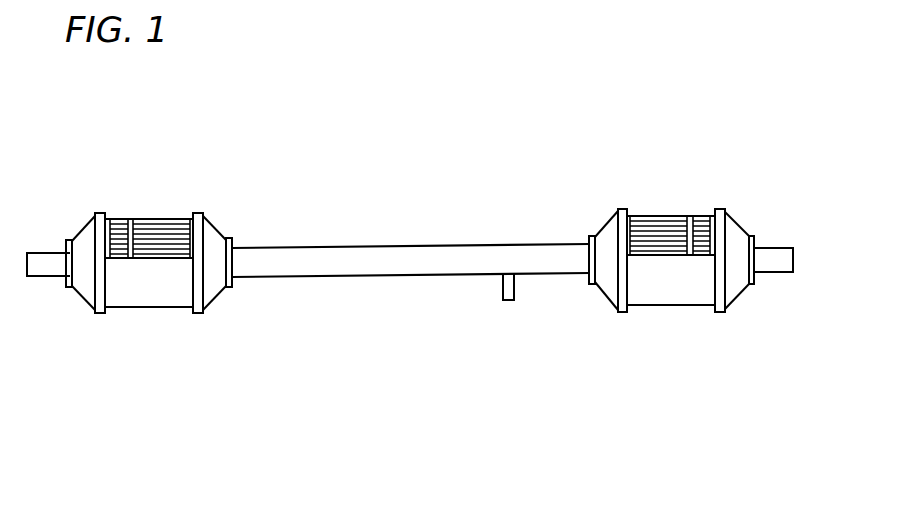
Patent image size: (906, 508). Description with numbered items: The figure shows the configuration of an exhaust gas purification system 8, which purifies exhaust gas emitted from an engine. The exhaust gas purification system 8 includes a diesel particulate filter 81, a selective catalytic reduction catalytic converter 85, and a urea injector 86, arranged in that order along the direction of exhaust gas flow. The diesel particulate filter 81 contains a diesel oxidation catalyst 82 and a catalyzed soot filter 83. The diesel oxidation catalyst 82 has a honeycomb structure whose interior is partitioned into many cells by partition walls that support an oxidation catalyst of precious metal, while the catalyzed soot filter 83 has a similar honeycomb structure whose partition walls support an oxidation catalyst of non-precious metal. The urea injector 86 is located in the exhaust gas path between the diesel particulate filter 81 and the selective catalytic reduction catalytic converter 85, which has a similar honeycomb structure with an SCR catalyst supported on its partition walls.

The exhaust gas purification system 8 is at (303, 161).
The diesel particulate filter 81 is at (166, 383).
The diesel oxidation catalyst 82 is at (117, 250).
The catalyzed soot filter 83 is at (162, 250).
The selective catalytic reduction catalytic converter 85 is at (668, 318).
The urea injector 86 is at (502, 285).